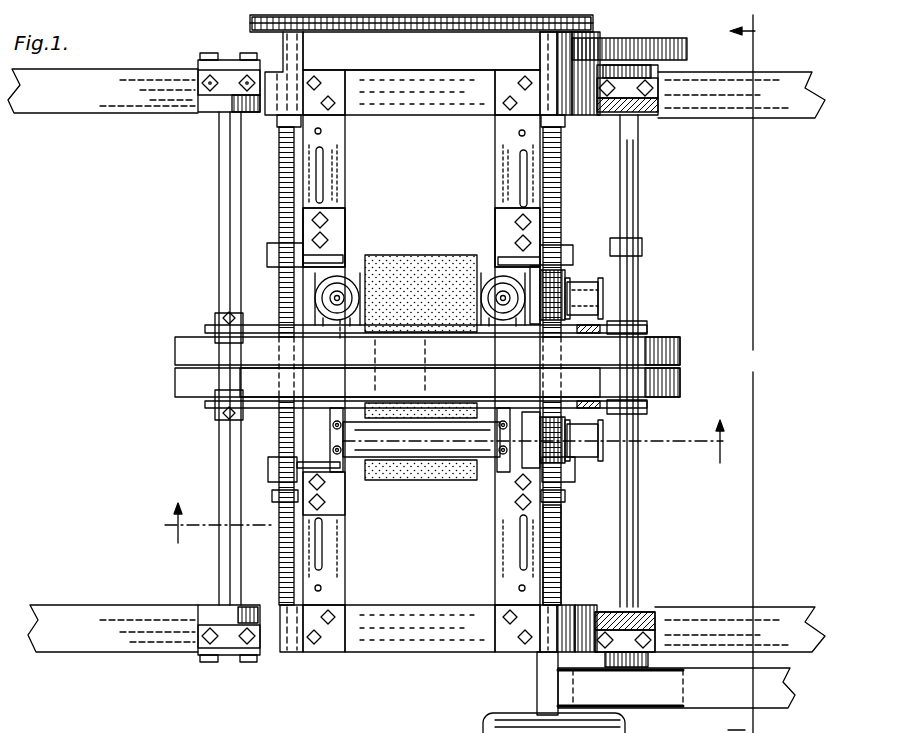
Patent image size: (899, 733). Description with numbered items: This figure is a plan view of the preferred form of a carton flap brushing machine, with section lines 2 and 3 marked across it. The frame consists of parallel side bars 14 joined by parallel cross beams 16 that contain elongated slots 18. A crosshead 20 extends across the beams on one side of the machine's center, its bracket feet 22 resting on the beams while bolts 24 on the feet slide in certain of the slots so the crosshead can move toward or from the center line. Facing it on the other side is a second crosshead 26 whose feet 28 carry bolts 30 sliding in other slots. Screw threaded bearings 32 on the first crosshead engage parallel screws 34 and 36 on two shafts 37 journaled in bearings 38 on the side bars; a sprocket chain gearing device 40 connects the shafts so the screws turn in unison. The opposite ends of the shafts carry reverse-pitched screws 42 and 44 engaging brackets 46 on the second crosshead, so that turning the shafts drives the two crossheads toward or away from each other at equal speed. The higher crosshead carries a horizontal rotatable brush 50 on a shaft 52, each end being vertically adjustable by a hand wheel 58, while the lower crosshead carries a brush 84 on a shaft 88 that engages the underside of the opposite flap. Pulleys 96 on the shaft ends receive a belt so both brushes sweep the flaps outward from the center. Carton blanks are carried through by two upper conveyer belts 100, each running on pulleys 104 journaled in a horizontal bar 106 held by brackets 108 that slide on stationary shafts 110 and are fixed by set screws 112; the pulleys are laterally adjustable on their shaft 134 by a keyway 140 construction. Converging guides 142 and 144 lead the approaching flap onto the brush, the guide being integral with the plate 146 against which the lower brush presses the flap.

The section line 2- 2 is at (759, 374).
The section line 3- 3 is at (445, 481).
The side bars 14 is at (717, 107).
The cross beams 16 is at (336, 132).
The elongated slots 18 is at (322, 163).
The crosshead 20 is at (340, 256).
The bracket feet 22 is at (280, 222).
The bolts 24 is at (326, 239).
The crosshead 26 is at (345, 478).
The feet 28 is at (318, 489).
The bolts 30 is at (300, 491).
The screw threaded bearings 32 is at (280, 255).
The screw 34 is at (562, 168).
The screw 36 is at (281, 163).
The shafts 37 is at (283, 126).
The bearings 38 is at (287, 92).
The sprocket chain gearing device 40 is at (413, 32).
The screw 42 is at (280, 492).
The screw 44 is at (561, 528).
The brackets 46 is at (275, 463).
The brush 50 is at (414, 255).
The shaft 52 is at (638, 246).
The hand wheel 58 is at (500, 310).
The brush 84 is at (410, 462).
The shaft 88 is at (567, 440).
The pulleys 96 is at (595, 293).
The upper conveyer belts 100 is at (427, 367).
The pulleys 104 is at (647, 326).
The horizontal bar 106 is at (420, 382).
The brackets 108 is at (262, 322).
The stationary shafts 110 is at (219, 238).
The set screws 112 is at (226, 318).
The shaft 134 is at (639, 192).
The keyway 140 is at (628, 205).
The guide 142 is at (565, 455).
The guide 144 is at (565, 276).
The plate 146 is at (437, 450).